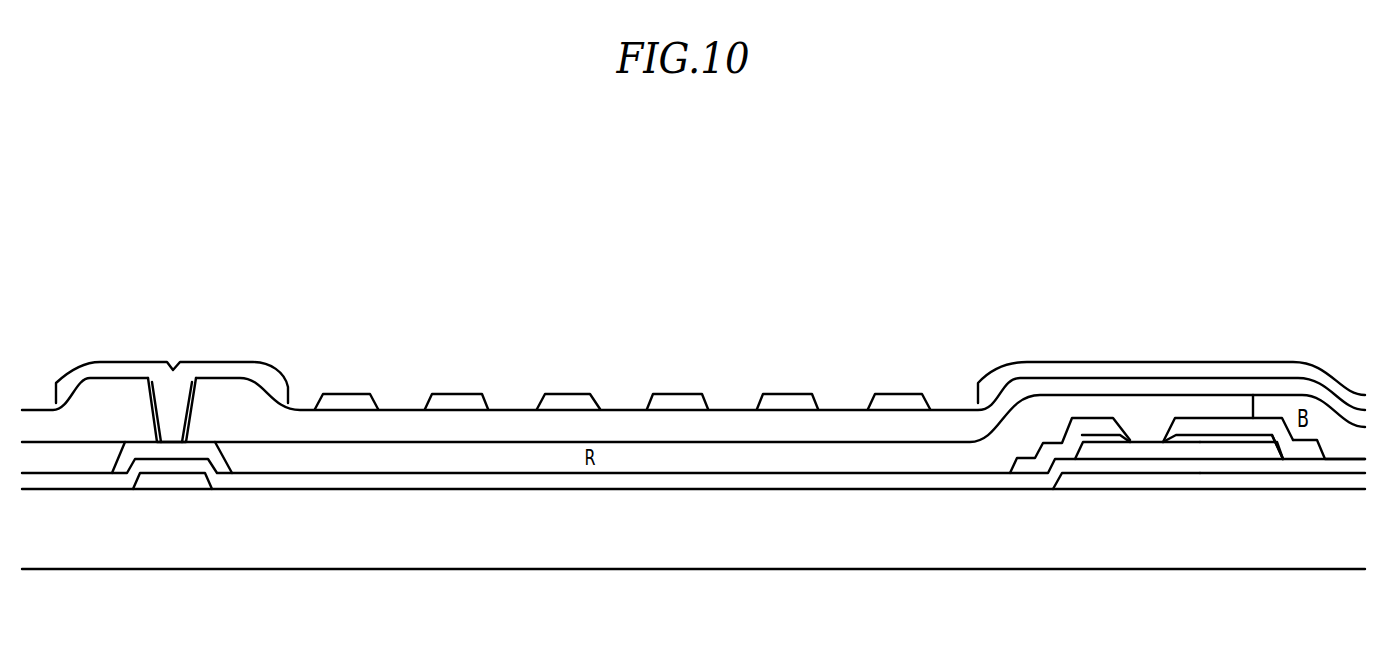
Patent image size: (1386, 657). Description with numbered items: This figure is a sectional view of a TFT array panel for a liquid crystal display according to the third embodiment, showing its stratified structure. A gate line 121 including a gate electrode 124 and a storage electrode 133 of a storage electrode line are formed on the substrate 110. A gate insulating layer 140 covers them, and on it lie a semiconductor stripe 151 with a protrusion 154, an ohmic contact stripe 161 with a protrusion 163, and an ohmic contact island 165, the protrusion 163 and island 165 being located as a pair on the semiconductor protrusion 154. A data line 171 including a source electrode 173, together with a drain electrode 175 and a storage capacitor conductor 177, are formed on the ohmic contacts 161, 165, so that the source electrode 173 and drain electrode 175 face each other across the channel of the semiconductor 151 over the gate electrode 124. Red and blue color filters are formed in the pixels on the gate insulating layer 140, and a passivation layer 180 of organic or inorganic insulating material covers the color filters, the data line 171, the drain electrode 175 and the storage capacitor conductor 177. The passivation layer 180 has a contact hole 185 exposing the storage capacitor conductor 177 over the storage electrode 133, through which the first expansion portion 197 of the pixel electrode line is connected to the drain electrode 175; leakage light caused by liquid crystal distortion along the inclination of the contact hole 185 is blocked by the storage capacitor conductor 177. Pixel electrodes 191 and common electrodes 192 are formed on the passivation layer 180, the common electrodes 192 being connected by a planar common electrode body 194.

The substrate 110 is at (282, 552).
The gate line 121 is at (1338, 481).
The gate electrode 124 is at (1140, 481).
The storage electrode 133 is at (173, 483).
The gate insulating layer 140 is at (383, 481).
The semiconductor stripe 151 is at (1242, 450).
The protrusion of semiconductor stripe 154 is at (1108, 447).
The ohmic contact stripe 161 is at (1262, 437).
The protrusion of ohmic contact stripe 163 is at (1200, 440).
The ohmic contact island 165 is at (1090, 440).
The data line 171 is at (1305, 448).
The source electrode 173 is at (1184, 425).
The drain electrode 175 is at (1028, 468).
The storage capacitor conductor 177 is at (150, 452).
The passivation layer 180 is at (427, 424).
The contact hole 185 is at (195, 410).
The pixel electrode 191 is at (903, 590).
The common electrode 192 is at (797, 590).
The common electrode body 194 is at (1008, 376).
The first expansion portion 197 is at (133, 373).